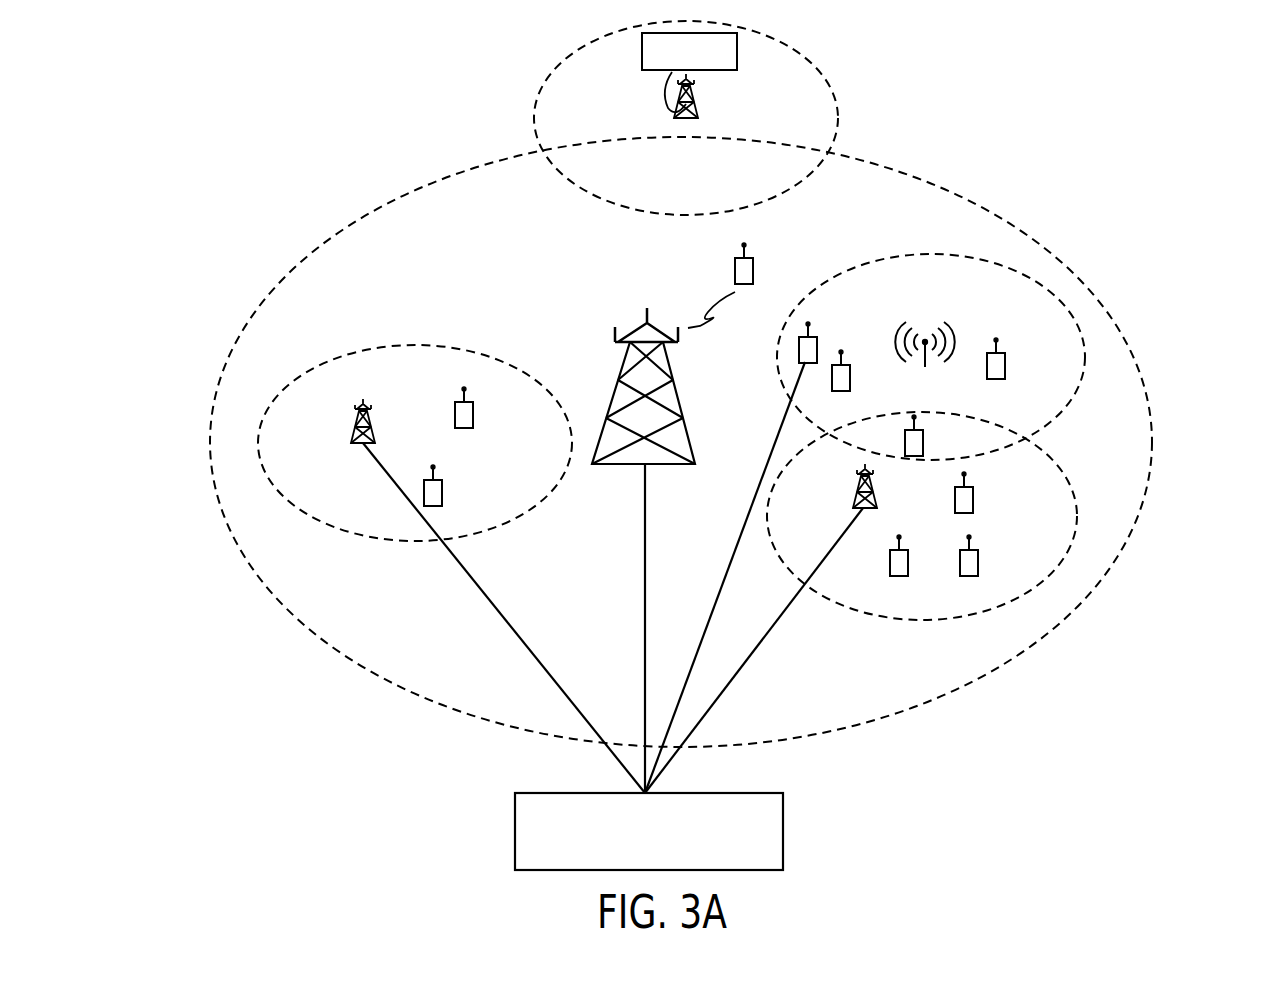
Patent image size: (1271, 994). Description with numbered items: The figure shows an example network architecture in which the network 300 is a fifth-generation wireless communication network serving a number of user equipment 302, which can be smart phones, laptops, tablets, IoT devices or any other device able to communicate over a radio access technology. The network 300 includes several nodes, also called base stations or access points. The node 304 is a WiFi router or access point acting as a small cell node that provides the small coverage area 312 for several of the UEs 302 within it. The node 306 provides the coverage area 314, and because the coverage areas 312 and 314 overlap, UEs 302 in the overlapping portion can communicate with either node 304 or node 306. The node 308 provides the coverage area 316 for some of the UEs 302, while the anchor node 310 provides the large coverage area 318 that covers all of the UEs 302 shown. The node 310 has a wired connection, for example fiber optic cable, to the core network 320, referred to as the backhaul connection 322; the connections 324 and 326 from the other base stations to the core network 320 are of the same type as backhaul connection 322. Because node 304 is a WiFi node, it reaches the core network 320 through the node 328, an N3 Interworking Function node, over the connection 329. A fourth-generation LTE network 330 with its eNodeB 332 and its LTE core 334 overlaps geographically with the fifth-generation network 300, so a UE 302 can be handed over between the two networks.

The network 300 is at (1007, 157).
The user equipment 302 is at (753, 276).
The node 304 is at (905, 340).
The node 306 is at (878, 492).
The node 308 is at (358, 443).
The node 310 is at (678, 403).
The coverage area 312 is at (1067, 398).
The coverage area 314 is at (1065, 470).
The coverage area 316 is at (513, 520).
The coverage area 318 is at (1153, 447).
The core network 320 is at (783, 835).
The backhaul connection 322 is at (645, 510).
The connection 324 is at (768, 636).
The backhaul connection 326 is at (537, 652).
The node 328 is at (800, 345).
The connection 329 is at (725, 576).
The 4G/LTE network 330 is at (838, 113).
The eNodeB 332 is at (698, 110).
The 4G/LTE core 334 is at (737, 50).